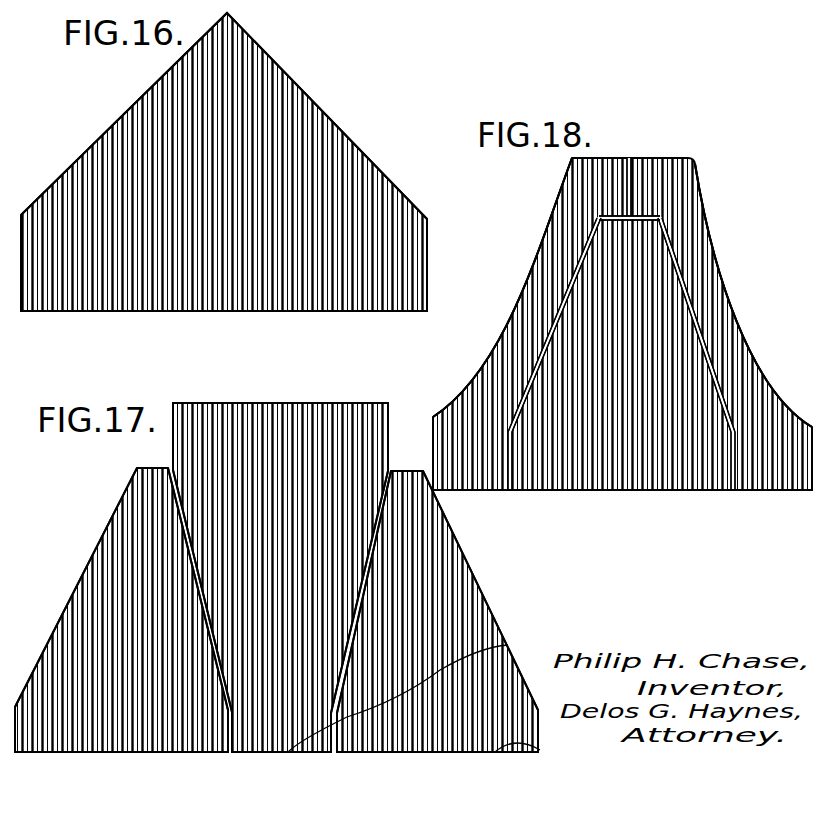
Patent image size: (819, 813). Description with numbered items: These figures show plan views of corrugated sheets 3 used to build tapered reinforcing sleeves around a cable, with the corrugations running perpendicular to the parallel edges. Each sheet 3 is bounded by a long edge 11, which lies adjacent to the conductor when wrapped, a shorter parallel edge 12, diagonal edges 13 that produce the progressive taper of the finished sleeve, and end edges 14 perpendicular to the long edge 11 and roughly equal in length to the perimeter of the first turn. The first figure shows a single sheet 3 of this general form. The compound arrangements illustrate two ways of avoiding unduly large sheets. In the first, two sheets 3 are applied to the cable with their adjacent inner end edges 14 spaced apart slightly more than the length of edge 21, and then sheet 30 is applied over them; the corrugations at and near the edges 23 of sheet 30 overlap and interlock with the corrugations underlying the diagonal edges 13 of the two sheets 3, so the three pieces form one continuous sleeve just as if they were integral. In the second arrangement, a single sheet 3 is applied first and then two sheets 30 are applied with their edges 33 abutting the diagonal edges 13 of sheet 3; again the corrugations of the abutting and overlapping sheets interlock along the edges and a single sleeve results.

In FIG. 16, the corrugated sheet 3 is at (143, 137).
In FIG. 17, the corrugated sheet 3 is at (115, 572).
In FIG. 18, the corrugated sheet 3 is at (623, 470).
In FIG. 16, the long edge 11 is at (182, 310).
In FIG. 17, the long edge 11 is at (533, 752).
In FIG. 18, the long edge 11 is at (583, 488).
In FIG. 17, the short parallel edge 12 is at (153, 467).
In FIG. 18, the short parallel edge 12 is at (636, 216).
In FIG. 16, the diagonal edge 13 is at (80, 160).
In FIG. 17, the diagonal edge 13 is at (185, 543).
In FIG. 18, the diagonal edge 13 is at (538, 368).
In FIG. 16, the end edge 14 is at (427, 268).
In FIG. 17, the end edge 14 is at (223, 723).
In FIG. 18, the end edge 14 is at (515, 470).
In FIG. 17, the edge of sheet 30 21 is at (411, 690).
In FIG. 17, the edge of sheet 30 23 is at (180, 517).
In FIG. 17, the additional sheet 30 is at (282, 428).
In FIG. 18, the additional sheet 30 is at (538, 320).
In FIG. 18, the edge of sheet 30 33 is at (573, 283).